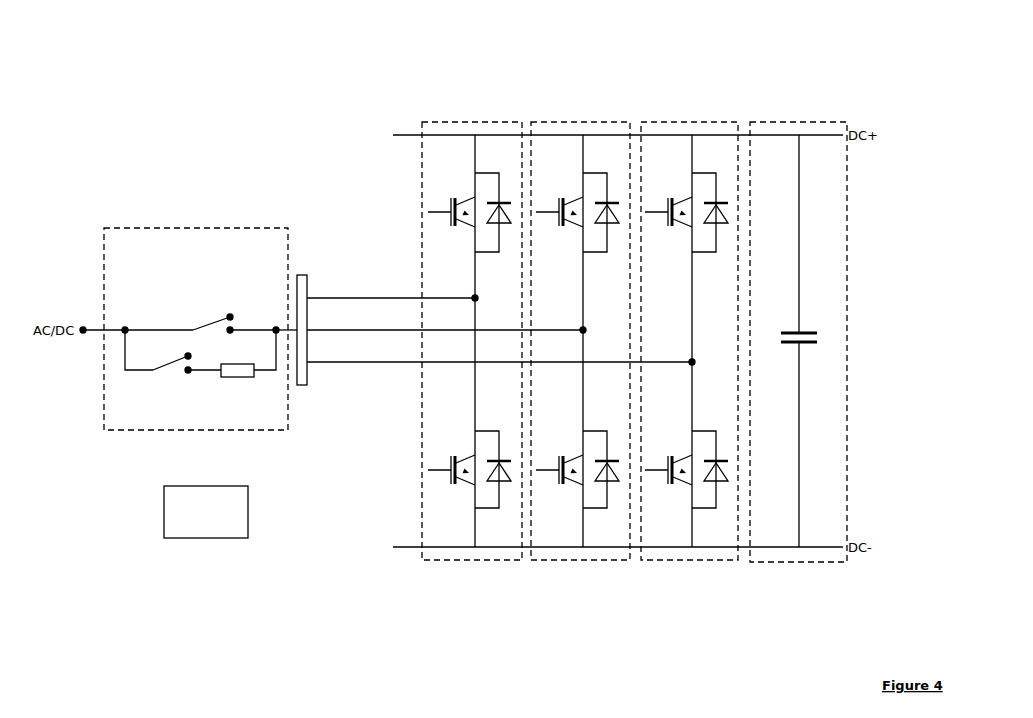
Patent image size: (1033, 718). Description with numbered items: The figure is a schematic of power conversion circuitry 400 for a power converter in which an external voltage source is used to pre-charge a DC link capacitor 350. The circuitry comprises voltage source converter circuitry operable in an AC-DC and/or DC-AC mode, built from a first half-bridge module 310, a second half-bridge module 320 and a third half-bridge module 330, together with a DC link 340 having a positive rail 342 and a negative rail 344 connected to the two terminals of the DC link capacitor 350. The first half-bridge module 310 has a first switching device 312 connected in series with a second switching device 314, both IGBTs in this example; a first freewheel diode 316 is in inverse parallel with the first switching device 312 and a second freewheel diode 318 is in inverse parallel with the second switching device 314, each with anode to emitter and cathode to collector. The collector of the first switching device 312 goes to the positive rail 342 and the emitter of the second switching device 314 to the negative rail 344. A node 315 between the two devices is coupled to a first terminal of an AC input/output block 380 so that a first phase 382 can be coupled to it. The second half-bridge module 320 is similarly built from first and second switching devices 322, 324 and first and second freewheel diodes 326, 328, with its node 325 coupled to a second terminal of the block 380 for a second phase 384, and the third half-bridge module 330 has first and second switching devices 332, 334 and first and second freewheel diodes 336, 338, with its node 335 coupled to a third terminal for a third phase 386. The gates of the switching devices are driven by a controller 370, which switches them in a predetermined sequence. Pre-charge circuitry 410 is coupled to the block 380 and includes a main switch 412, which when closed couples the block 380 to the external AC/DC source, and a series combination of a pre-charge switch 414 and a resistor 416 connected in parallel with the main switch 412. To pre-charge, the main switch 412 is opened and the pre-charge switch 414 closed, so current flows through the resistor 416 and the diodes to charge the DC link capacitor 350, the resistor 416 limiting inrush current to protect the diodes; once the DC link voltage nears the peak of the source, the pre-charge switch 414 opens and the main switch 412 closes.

The power conversion circuitry 400 is at (120, 79).
The first half-bridge module 310 is at (482, 121).
The second half-bridge module 320 is at (592, 121).
The third half-bridge module 330 is at (701, 121).
The DC link 340 is at (790, 121).
The first switching device 312 is at (452, 197).
The second switching device 314 is at (452, 455).
The node 315 is at (476, 296).
The first freewheel diode 316 is at (501, 200).
The second freewheel diode 318 is at (501, 458).
The first switching device 322 is at (560, 197).
The second switching device 324 is at (560, 455).
The node 325 is at (584, 328).
The first freewheel diode 326 is at (609, 200).
The second freewheel diode 328 is at (609, 458).
The first switching device 332 is at (669, 197).
The second switching device 334 is at (669, 455).
The node 335 is at (693, 360).
The first freewheel diode 336 is at (718, 200).
The second freewheel diode 338 is at (718, 458).
The positive rail 342 is at (837, 138).
The negative rail 344 is at (815, 546).
The DC link capacitor 350 is at (813, 345).
The controller 370 is at (206, 512).
The AC input/output block 380 is at (305, 274).
The first phase 382 is at (330, 297).
The second phase 384 is at (355, 329).
The third phase 386 is at (386, 361).
The pre-charge circuitry 410 is at (196, 329).
The main switch 412 is at (213, 322).
The pre-charge switch 414 is at (168, 372).
The resistor 416 is at (237, 378).